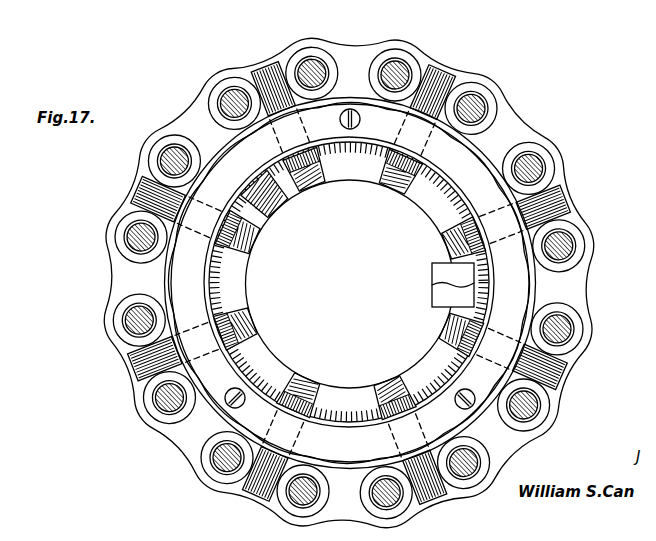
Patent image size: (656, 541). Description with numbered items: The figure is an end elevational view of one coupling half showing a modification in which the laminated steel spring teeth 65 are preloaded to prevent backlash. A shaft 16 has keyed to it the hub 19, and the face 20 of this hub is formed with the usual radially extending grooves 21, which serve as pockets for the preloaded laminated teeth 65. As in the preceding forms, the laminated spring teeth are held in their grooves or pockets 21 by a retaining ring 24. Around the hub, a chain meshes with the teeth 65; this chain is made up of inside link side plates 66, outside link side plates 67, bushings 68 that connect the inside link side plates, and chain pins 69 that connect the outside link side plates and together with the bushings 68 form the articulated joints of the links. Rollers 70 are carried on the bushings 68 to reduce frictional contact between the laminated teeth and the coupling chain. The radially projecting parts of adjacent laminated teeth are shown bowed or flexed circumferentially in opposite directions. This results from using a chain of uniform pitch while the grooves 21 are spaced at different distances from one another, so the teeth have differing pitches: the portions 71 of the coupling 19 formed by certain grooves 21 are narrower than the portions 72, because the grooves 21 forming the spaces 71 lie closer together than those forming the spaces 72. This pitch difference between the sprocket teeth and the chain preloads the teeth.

The shaft 16 is at (350, 284).
The hub 19 is at (353, 186).
The face 20 is at (350, 283).
The radially extending grooves 21 is at (250, 240).
The retaining ring 24 is at (258, 192).
The laminated steel spring teeth 65 is at (266, 62).
The inside link side plates 66 is at (584, 222).
The outside link side plates 67 is at (524, 118).
The bushings 68 is at (543, 165).
The chain pins 69 is at (486, 98).
The rollers 70 is at (399, 54).
The portions 71 is at (432, 282).
The portions 72 is at (293, 190).